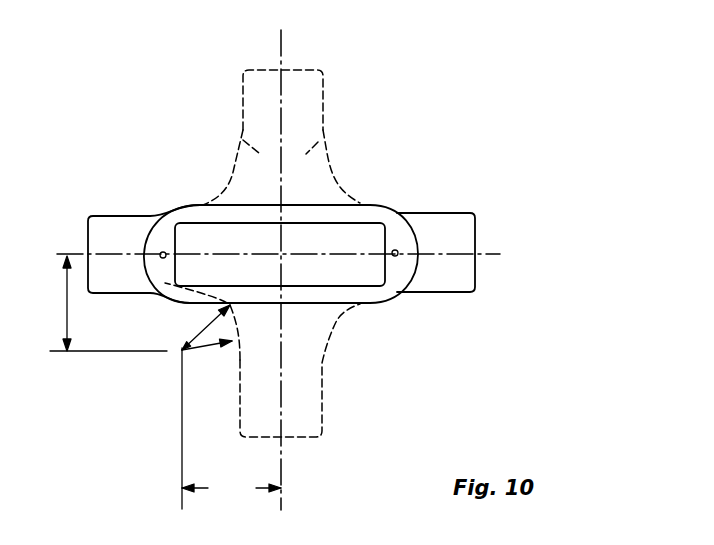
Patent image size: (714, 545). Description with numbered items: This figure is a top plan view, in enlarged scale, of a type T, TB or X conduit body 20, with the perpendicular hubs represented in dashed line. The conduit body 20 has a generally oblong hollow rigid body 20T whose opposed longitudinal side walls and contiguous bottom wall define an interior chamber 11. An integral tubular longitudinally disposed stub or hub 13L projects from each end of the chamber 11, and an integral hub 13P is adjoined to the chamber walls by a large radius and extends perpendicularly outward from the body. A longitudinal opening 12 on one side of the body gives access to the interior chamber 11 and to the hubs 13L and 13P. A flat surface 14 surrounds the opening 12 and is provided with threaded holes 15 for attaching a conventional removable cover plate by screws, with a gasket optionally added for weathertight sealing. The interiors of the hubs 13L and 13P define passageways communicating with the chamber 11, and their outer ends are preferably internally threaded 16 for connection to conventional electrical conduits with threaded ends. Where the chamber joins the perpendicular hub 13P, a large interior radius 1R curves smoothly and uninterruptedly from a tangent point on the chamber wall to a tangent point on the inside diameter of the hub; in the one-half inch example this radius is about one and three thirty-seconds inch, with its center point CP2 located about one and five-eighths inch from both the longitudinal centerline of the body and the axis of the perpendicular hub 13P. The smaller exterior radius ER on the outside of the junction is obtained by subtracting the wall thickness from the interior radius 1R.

The interior chamber 11 is at (316, 247).
The longitudinal opening 12 is at (345, 225).
The longitudinal hub 13L is at (102, 214).
The perpendicular hub 13P is at (330, 80).
The flat surface 14 is at (323, 207).
The threaded holes 15 is at (163, 252).
The internal threads 16 is at (103, 238).
The conduit body 20 is at (505, 146).
The oblong hollow rigid body 20T is at (247, 206).
The center point CP2 is at (165, 382).
The interior radius 1R is at (205, 326).
The exterior radius ER is at (209, 347).